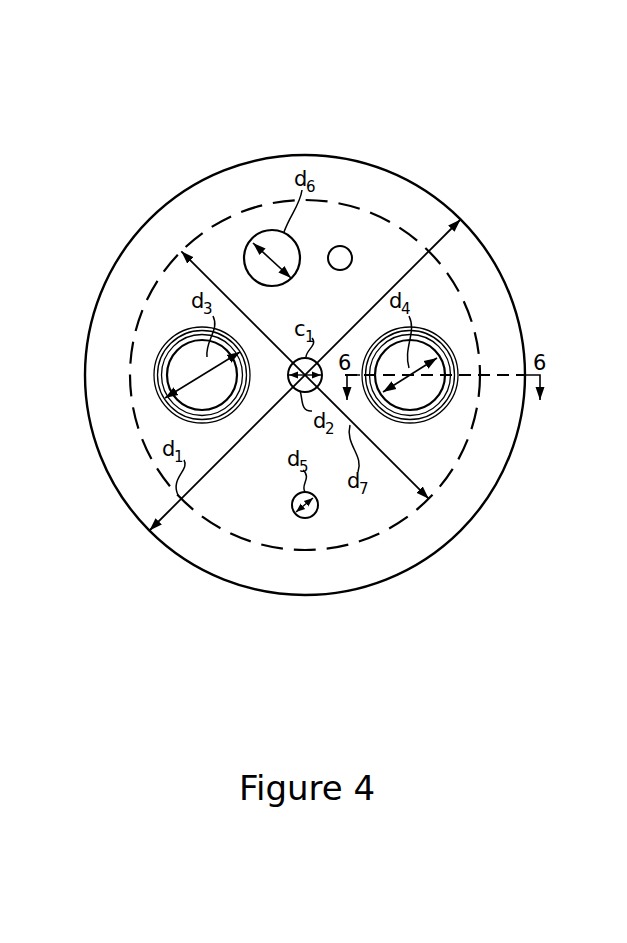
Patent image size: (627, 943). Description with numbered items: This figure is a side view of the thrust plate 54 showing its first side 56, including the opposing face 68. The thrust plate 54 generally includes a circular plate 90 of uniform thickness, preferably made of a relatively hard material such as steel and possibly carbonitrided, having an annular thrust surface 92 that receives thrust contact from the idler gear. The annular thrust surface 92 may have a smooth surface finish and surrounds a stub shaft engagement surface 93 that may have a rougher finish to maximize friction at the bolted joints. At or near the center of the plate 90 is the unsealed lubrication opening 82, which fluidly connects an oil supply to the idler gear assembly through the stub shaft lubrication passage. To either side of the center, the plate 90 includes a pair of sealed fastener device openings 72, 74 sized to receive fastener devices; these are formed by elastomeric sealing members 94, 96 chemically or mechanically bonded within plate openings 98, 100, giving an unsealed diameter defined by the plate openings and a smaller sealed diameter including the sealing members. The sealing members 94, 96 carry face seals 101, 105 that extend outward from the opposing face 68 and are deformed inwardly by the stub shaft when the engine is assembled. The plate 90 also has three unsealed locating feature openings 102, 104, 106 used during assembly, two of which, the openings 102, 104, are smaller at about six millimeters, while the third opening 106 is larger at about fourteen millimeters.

The thrust plate 54 is at (433, 131).
The first side 56 is at (466, 191).
The opposing face 68 is at (494, 272).
The sealed fastener device opening 72 is at (421, 394).
The sealed fastener device opening 74 is at (168, 375).
The unsealed lubrication opening 82 is at (262, 419).
The plate 90 is at (229, 178).
The annular thrust surface 92 is at (137, 250).
The stub shaft engagement surface 93 is at (430, 475).
The sealing member 94 is at (452, 351).
The sealing member 96 is at (168, 398).
The plate opening 98 is at (437, 417).
The plate opening 100 is at (161, 352).
The face seal 101 is at (438, 335).
The unsealed locating feature opening 102 is at (305, 519).
The unsealed locating feature opening 104 is at (352, 256).
The face seal 105 is at (169, 340).
The unsealed locating feature opening 106 is at (294, 250).